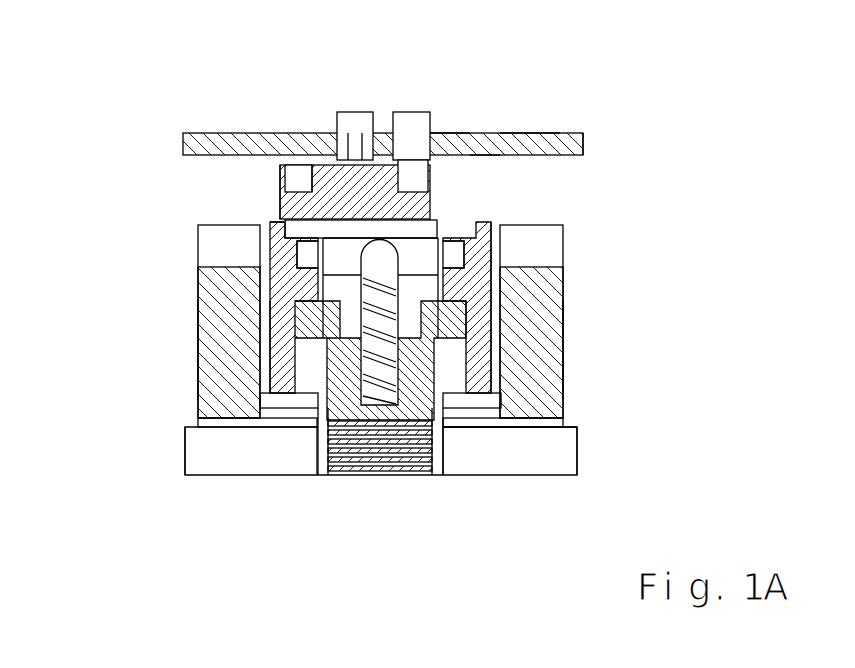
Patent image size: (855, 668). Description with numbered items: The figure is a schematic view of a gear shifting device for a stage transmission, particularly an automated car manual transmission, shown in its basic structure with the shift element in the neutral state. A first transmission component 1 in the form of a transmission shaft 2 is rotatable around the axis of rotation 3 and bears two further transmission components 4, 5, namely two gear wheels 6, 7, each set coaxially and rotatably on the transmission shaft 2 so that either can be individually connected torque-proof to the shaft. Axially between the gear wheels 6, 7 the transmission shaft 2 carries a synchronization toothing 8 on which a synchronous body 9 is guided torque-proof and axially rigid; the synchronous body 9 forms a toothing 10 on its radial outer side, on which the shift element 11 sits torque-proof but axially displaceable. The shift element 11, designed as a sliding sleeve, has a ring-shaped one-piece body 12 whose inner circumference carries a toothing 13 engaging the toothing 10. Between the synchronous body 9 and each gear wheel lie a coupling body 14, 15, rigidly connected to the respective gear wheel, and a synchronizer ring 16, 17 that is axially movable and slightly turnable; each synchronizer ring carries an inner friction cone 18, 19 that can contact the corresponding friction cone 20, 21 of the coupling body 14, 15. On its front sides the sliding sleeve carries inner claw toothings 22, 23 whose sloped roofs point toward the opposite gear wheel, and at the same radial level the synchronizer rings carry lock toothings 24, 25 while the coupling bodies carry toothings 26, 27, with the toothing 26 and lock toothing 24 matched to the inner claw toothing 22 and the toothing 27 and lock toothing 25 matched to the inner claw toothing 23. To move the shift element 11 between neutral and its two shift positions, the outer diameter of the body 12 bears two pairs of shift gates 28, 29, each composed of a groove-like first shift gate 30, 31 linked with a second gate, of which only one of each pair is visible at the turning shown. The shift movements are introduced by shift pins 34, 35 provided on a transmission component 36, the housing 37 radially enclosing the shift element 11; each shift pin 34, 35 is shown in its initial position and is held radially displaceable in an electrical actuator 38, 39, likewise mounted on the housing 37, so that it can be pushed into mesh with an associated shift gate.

The first transmission component 1 is at (176, 452).
The transmission shaft 2 is at (252, 454).
The axis of rotation 3 is at (592, 478).
The transmission component 4 is at (188, 354).
The transmission component 5 is at (573, 388).
The gear wheel 6 is at (262, 300).
The gear wheel 7 is at (532, 430).
The synchronization toothing 8 is at (376, 473).
The synchronous body 9 is at (420, 425).
The toothing 10 is at (437, 229).
The shift element 11 is at (300, 193).
The body 12 is at (322, 165).
The toothing 13 is at (335, 422).
The coupling body 14 is at (212, 350).
The coupling body 15 is at (500, 360).
The synchronizer ring 16 is at (271, 288).
The synchronizer ring 17 is at (545, 300).
The friction cone 18 is at (262, 306).
The friction cone 19 is at (497, 313).
The friction cone 20 is at (275, 408).
The friction cone 21 is at (470, 428).
The inner claw toothing 22 is at (269, 178).
The inner claw toothing 23 is at (446, 193).
The lock toothing 24 is at (298, 258).
The lock toothing 25 is at (446, 240).
The toothing 26 is at (285, 212).
The toothing 27 is at (492, 236).
The pair of shift gates 28 is at (290, 247).
The pair of shift gates 29 is at (586, 151).
The first shift gate 30 is at (262, 242).
The first shift gate 31 is at (456, 133).
The shift pin 34 is at (342, 112).
The shift pin 35 is at (431, 170).
The transmission component 36 is at (585, 128).
The housing 37 is at (520, 133).
The actuator 38 is at (398, 112).
The actuator 39 is at (432, 112).